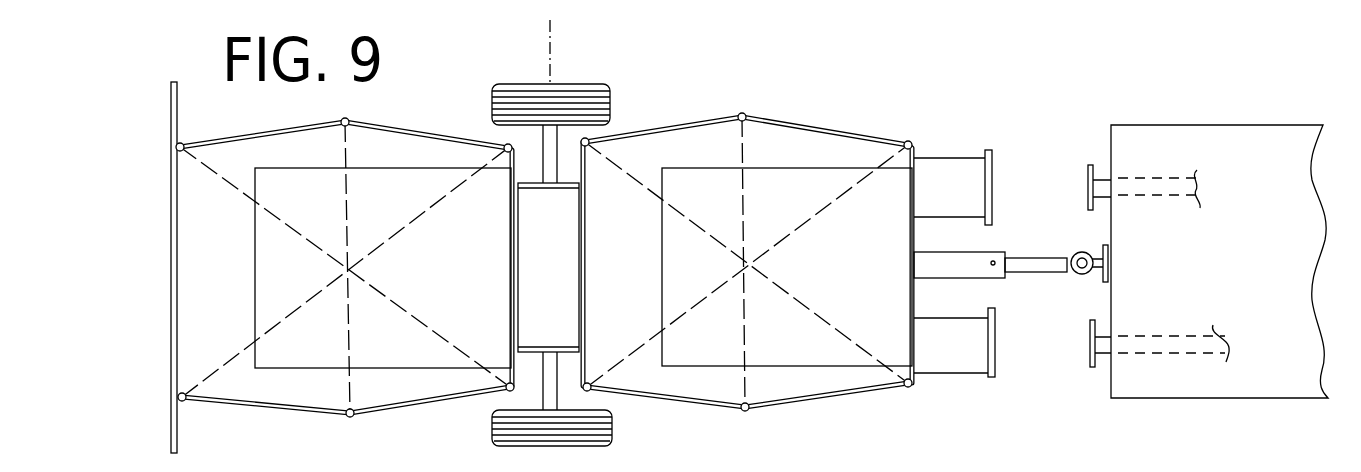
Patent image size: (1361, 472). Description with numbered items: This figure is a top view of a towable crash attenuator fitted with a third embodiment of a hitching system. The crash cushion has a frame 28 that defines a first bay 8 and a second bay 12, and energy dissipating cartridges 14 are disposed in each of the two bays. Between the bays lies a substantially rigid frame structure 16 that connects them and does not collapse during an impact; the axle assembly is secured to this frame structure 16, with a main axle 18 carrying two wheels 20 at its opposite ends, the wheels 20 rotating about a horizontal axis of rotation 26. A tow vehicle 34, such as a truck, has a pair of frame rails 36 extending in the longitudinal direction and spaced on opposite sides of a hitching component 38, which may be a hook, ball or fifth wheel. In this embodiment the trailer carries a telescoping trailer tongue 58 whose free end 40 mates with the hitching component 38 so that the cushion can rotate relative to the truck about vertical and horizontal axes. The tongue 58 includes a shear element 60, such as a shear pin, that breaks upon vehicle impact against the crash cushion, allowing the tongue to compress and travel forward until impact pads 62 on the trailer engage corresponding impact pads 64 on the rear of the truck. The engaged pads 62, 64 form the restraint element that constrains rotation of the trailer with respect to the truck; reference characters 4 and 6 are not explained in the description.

The implement body 4 is at (912, 268).
The wall 6 is at (172, 262).
The first bay 8 is at (345, 295).
The second bay 12 is at (773, 415).
The energy dissipating cartridge 14 is at (454, 272).
The frame structure 16 is at (561, 252).
The main axle 18 is at (552, 155).
The wheel 20 is at (594, 88).
The horizontal axis of rotation 26 is at (548, 30).
The frame 28 is at (330, 418).
The vehicle 34 is at (1266, 259).
The frame rail 36 is at (1158, 186).
The hitching component 38 is at (1110, 262).
The free end 40 is at (1082, 278).
The telescoping trailer tongue 58 is at (1026, 274).
The shear element 60 is at (993, 251).
The impact pad 62 is at (990, 170).
The impact pad 64 is at (1088, 186).